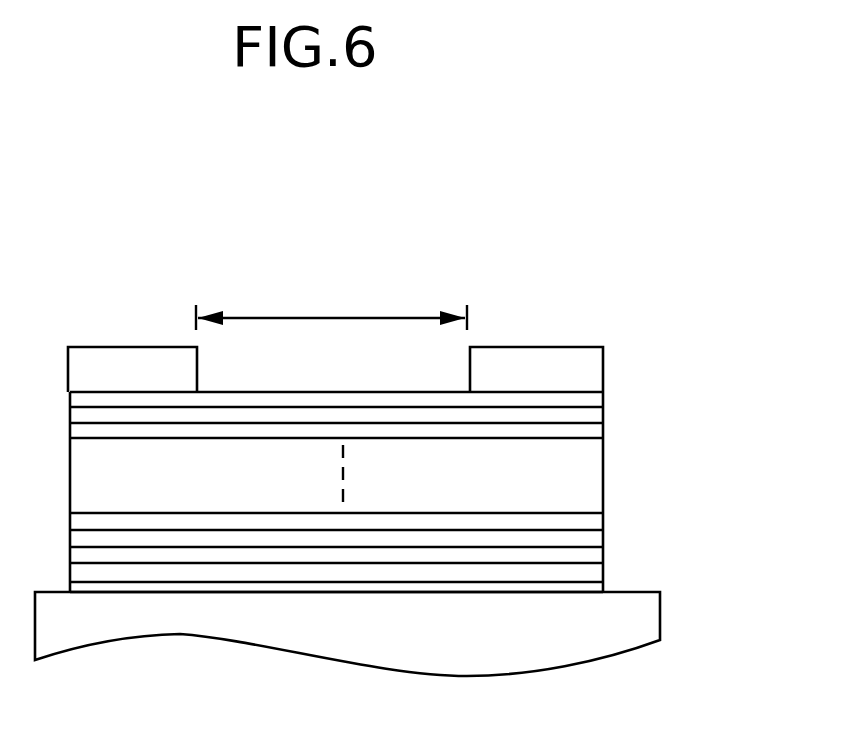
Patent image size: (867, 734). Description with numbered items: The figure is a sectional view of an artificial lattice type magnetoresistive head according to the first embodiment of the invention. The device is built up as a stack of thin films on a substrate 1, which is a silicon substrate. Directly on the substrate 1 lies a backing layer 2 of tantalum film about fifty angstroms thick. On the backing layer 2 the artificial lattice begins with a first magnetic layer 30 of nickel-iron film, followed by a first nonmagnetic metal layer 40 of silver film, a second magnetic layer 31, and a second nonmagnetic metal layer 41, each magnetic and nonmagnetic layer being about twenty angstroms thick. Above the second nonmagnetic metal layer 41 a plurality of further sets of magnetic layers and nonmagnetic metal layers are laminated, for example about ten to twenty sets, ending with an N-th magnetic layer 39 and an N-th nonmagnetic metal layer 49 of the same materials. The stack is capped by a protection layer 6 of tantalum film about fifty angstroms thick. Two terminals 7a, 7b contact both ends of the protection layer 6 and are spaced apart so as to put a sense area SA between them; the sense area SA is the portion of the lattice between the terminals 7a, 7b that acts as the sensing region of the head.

The substrate 1 is at (634, 630).
The backing layer 2 is at (603, 586).
The first magnetic layer 30 is at (603, 567).
The first nonmagnetic metal layer 40 is at (603, 551).
The second magnetic layer 31 is at (603, 536).
The second nonmagnetic metal layer 41 is at (603, 518).
The N-th magnetic layer 39 is at (603, 432).
The N-th nonmagnetic metal layer 49 is at (603, 416).
The protection layer 6 is at (603, 398).
The terminal 7a is at (125, 365).
The terminal 7b is at (517, 357).
The sense area SA is at (331, 297).